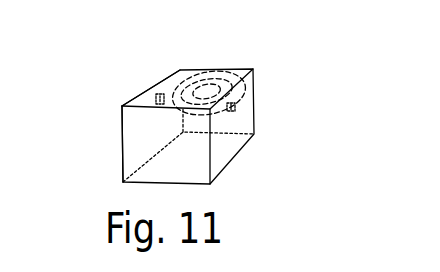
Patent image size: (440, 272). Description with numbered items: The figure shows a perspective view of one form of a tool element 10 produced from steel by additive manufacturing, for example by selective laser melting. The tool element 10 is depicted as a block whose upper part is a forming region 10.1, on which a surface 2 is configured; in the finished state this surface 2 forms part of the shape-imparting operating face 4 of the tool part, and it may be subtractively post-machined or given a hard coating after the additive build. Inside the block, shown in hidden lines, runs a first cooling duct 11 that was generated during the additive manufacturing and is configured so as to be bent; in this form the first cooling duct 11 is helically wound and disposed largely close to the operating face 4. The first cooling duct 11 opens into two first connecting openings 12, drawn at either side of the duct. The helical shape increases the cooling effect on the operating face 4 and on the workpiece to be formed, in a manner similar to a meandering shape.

The surface 2 is at (151, 60).
The shape-imparting operating face 4 is at (175, 81).
The tool element 10 is at (243, 90).
The forming region 10.1 is at (121, 152).
The first cooling duct 11 is at (207, 72).
The first connecting openings 12 is at (152, 98).